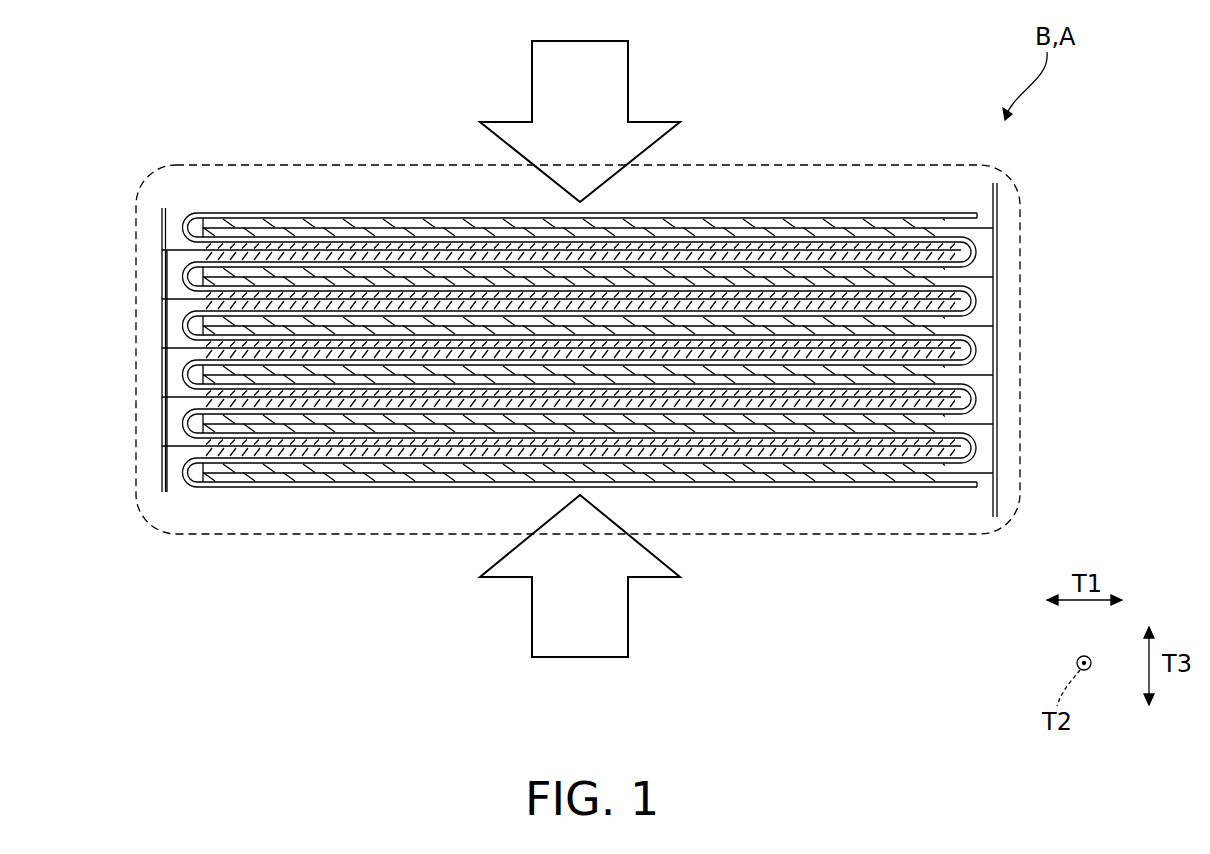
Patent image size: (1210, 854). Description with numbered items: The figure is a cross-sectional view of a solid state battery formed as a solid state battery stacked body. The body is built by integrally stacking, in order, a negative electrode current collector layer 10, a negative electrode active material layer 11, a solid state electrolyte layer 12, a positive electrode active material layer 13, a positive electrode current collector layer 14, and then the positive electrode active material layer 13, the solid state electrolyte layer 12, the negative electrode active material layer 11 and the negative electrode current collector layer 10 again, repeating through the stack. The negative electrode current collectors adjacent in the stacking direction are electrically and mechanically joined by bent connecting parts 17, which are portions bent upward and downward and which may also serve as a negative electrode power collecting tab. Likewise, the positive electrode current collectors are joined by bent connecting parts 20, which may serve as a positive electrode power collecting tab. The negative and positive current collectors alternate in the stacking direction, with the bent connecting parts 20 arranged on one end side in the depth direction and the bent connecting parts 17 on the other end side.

The negative electrode current collector layer 10 is at (885, 300).
The negative electrode active material layer 11 is at (737, 345).
The solid state electrolyte layer 12 is at (773, 290).
The positive electrode active material layer 13 is at (433, 352).
The positive electrode current collector layer 14 is at (265, 348).
The bent connecting part 17 is at (1000, 303).
The bent connecting part 20 is at (162, 330).